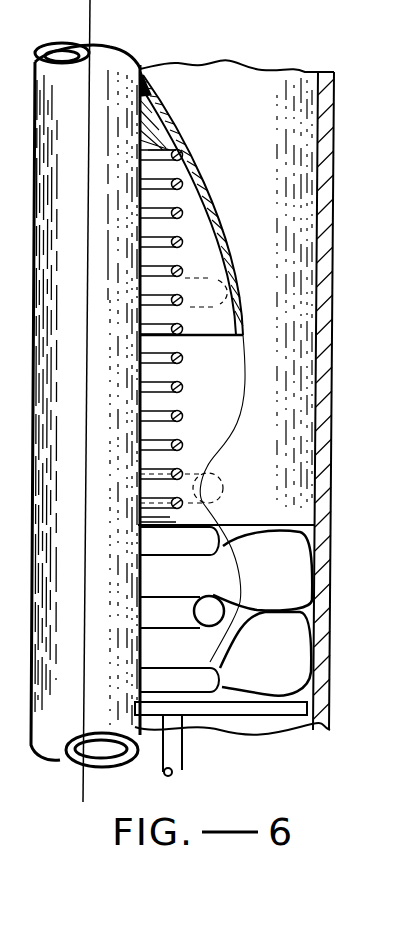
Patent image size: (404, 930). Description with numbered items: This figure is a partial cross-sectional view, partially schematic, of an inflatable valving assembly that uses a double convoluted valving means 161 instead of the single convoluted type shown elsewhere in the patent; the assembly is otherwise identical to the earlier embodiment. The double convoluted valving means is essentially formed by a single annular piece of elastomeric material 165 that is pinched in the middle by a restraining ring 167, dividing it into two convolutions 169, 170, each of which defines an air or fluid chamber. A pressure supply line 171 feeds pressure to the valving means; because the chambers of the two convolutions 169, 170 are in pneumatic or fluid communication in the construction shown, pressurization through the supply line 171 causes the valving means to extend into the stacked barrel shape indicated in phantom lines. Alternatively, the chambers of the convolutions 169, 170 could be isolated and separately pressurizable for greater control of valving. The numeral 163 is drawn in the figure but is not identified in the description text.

The double convoluted valving means 161 is at (253, 193).
The pin actuator housing 163 is at (234, 526).
The annular piece of elastomeric material 165 is at (312, 645).
The restraining ring 167 is at (209, 606).
The convolution 169 is at (312, 537).
The convolution 170 is at (315, 702).
The pressure supply line 171 is at (176, 752).